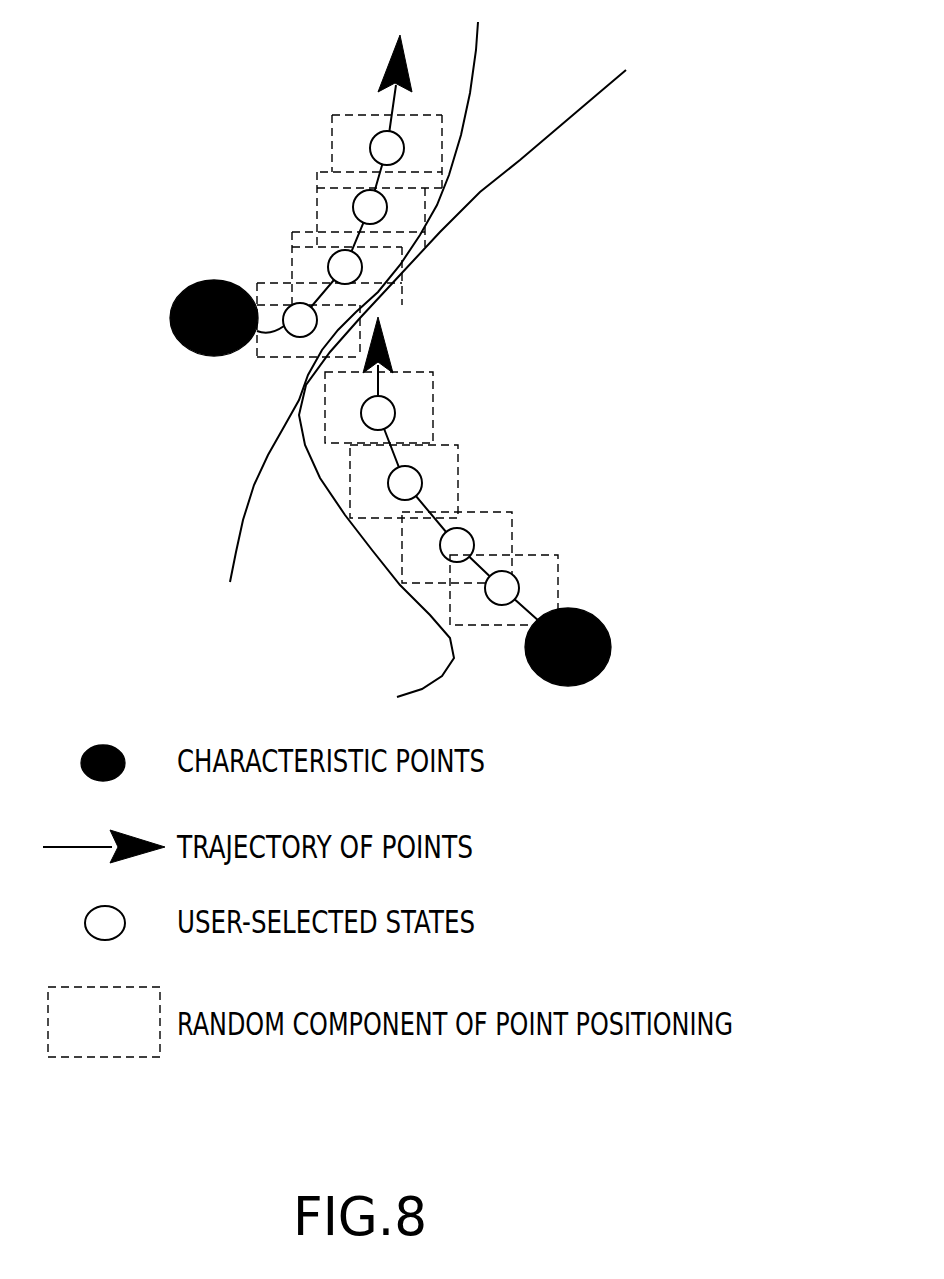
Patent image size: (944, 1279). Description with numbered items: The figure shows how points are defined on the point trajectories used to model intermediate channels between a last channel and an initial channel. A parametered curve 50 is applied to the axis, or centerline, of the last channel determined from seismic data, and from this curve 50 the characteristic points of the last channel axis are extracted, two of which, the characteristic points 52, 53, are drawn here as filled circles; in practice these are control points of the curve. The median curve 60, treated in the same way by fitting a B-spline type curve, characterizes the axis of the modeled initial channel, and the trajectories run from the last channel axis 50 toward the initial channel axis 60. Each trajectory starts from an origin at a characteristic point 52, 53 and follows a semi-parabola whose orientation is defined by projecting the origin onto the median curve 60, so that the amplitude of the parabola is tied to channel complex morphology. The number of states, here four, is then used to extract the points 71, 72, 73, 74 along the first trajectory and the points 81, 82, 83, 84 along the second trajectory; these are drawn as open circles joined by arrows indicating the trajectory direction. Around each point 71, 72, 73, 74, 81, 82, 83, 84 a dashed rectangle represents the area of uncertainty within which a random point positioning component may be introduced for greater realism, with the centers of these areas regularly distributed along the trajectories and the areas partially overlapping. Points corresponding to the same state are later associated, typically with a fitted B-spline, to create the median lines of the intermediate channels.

The last channel axis curve 50 is at (583, 113).
The last channel axis characteristic point 52 is at (180, 352).
The last channel axis characteristic point 53 is at (598, 675).
The median curve 60 is at (480, 47).
The trajectory point 71 is at (292, 309).
The trajectory point 72 is at (338, 256).
The trajectory point 73 is at (357, 198).
The trajectory point 74 is at (372, 139).
The trajectory point 81 is at (520, 583).
The trajectory point 82 is at (475, 540).
The trajectory point 83 is at (422, 475).
The trajectory point 84 is at (395, 405).